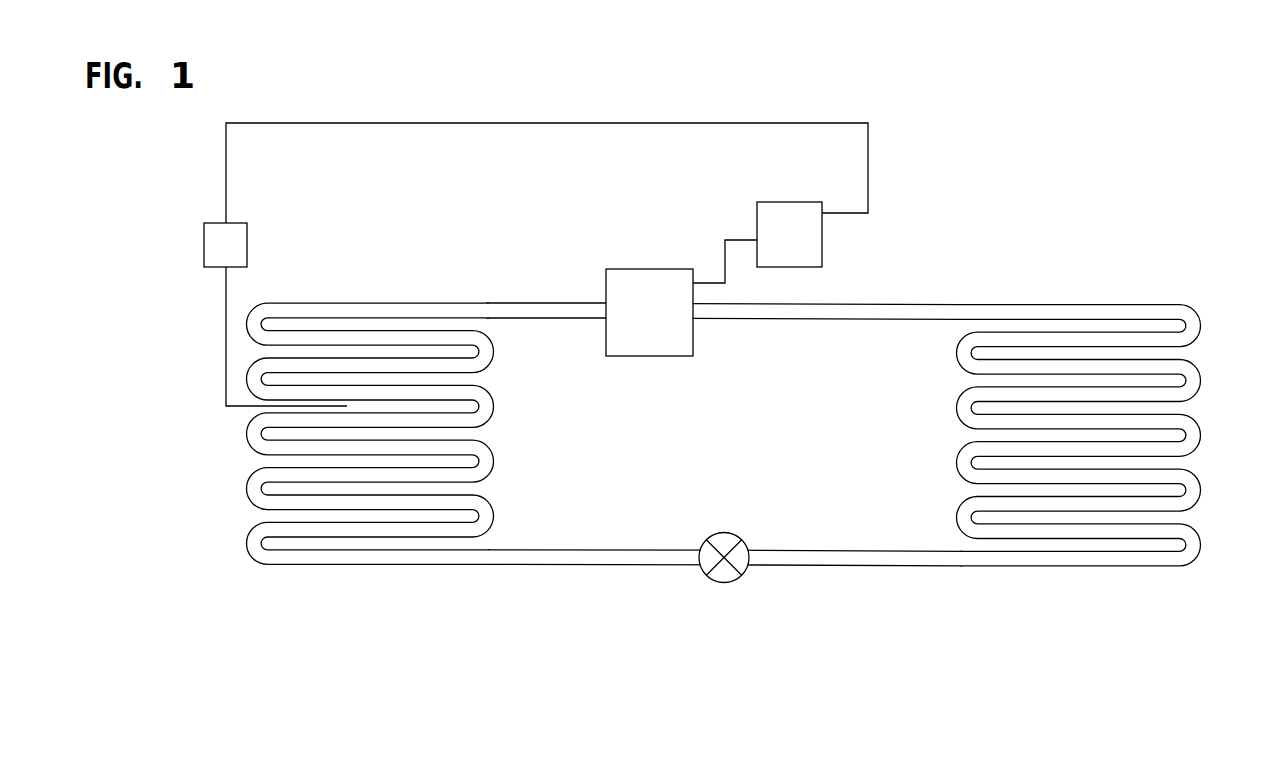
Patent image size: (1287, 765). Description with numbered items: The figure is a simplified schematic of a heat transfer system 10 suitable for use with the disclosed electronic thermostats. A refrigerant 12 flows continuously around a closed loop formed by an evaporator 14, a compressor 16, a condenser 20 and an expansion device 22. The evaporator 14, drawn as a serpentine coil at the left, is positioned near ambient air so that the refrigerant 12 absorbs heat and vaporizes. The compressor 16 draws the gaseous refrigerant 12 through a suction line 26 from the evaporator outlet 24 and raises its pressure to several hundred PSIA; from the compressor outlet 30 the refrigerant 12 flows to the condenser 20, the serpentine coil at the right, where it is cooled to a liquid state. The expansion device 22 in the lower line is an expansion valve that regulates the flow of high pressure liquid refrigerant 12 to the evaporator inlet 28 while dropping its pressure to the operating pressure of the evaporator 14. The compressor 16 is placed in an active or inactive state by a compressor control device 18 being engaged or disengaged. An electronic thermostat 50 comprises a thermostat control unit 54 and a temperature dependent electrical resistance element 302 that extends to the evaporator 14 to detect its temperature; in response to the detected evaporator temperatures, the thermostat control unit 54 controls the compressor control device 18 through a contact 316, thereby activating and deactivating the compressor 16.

The heat transfer system 10 is at (649, 391).
The refrigerant 12 is at (862, 559).
The evaporator 14 is at (368, 602).
The compressor 16 is at (588, 247).
The compressor control device 18 is at (822, 245).
The condenser 20 is at (1092, 602).
The expansion device 22 is at (732, 652).
The evaporator outlet 24 is at (481, 316).
The suction line 26 is at (550, 318).
The evaporator inlet 28 is at (542, 559).
The compressor outlet 30 is at (698, 312).
The electronic thermostat 50 is at (234, 207).
The thermostat control unit 54 is at (227, 243).
The temperature dependent electrical resistance element 302 is at (222, 345).
The contact 316 is at (362, 123).